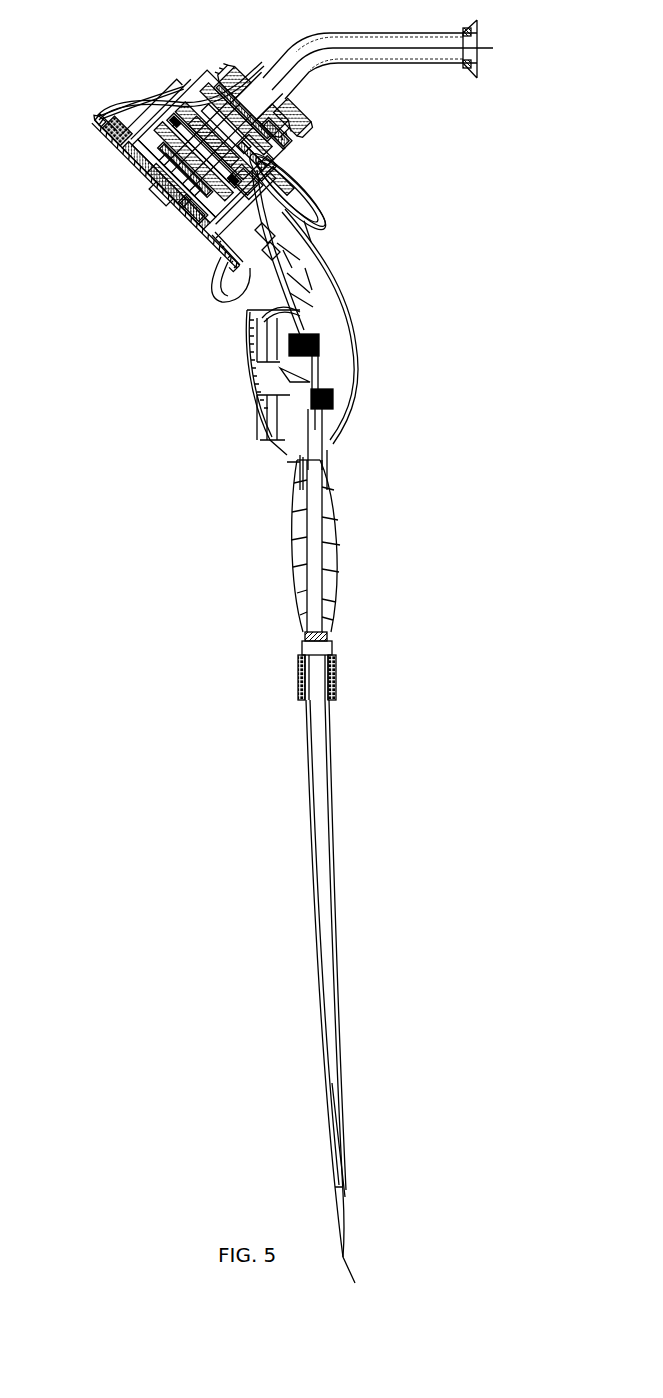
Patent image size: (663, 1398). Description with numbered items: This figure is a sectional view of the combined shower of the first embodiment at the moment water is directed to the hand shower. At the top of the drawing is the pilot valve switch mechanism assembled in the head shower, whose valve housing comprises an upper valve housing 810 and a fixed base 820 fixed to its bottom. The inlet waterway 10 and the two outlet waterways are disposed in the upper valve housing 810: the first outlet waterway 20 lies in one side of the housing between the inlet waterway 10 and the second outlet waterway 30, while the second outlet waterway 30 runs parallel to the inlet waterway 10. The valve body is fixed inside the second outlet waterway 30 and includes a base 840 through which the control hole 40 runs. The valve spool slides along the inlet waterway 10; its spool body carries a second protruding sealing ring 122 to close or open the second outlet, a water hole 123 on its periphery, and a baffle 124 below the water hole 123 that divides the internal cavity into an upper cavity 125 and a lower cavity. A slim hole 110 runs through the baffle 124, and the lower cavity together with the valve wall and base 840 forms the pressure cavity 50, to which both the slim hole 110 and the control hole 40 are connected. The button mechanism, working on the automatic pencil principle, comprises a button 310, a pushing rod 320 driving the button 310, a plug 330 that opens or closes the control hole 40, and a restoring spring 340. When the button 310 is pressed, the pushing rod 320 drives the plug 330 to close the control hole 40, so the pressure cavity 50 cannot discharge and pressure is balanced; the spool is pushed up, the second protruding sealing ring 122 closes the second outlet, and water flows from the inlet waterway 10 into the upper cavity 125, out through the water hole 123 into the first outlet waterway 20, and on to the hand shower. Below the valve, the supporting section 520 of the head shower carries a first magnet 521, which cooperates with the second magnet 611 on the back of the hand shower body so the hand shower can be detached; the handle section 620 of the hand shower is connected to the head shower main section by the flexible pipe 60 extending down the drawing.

The inlet waterway 10 is at (268, 90).
The first outlet waterway 20 is at (255, 150).
The second outlet waterway 30 is at (195, 123).
The control hole 40 is at (175, 123).
The pressure cavity 50 is at (240, 178).
The flexible pipe 60 is at (330, 762).
The slim hole 110 is at (212, 112).
The second protruding sealing ring 122 is at (265, 168).
The water hole 123 is at (270, 133).
The baffle 124 is at (275, 142).
The upper cavity 125 is at (228, 100).
The button 310 is at (160, 195).
The pushing rod 320 is at (185, 212).
The plug 330 is at (172, 150).
The restoring spring 340 is at (96, 123).
The supporting section 520 is at (347, 340).
The first magnet 521 is at (338, 402).
The second magnet 611 is at (342, 417).
The handle section 620 is at (335, 530).
The upper valve housing 810 is at (273, 168).
The fixed base 820 is at (225, 200).
The base 840 is at (163, 130).